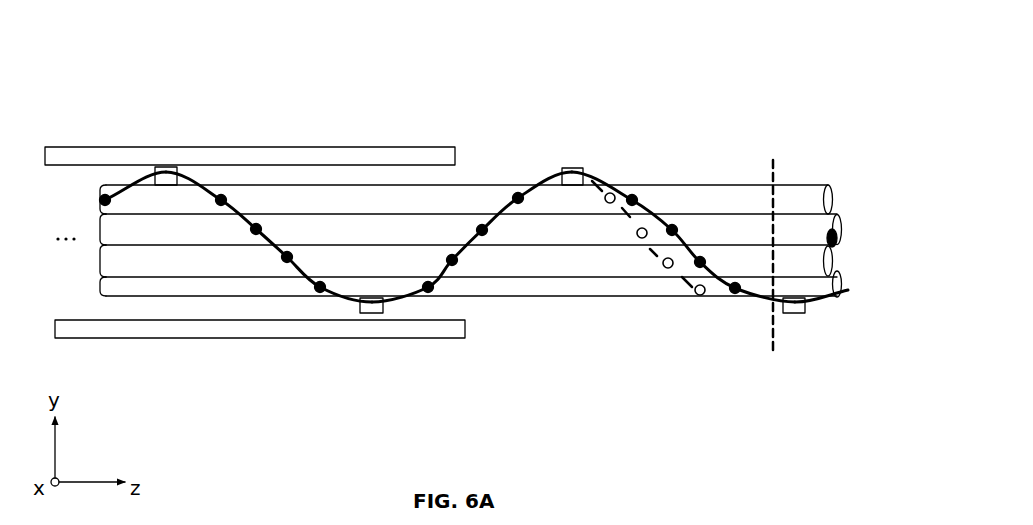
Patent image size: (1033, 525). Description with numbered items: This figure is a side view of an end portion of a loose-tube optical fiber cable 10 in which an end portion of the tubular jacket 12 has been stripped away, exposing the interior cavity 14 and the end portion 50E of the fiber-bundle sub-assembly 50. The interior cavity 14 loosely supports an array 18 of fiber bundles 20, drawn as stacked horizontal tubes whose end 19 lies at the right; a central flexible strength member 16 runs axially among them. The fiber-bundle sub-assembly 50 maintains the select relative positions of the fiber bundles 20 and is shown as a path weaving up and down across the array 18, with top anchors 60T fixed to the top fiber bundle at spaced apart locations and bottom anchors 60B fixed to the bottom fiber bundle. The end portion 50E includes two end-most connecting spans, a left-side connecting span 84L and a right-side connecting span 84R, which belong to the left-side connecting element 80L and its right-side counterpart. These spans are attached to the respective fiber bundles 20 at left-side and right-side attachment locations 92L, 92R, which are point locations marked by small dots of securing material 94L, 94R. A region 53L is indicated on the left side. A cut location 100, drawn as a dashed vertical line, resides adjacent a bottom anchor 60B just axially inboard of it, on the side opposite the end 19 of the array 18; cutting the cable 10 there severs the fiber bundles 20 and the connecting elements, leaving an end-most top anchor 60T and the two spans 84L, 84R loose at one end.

The loose-tube optical fiber cable 10 is at (158, 106).
The tubular jacket 12 is at (352, 148).
The interior cavity 14 is at (447, 175).
The strength member 16 is at (840, 246).
The array 18 is at (707, 173).
The end 19 is at (861, 196).
The fiber bundles 20 is at (372, 227).
The fiber-bundle sub-assembly 50 is at (624, 95).
The end portion 50E is at (717, 131).
The left region 53L is at (545, 274).
The top anchors 60T is at (167, 166).
The bottom anchors 60B is at (376, 314).
The left-side connecting element 80L is at (241, 201).
The left-side connecting span 84L is at (270, 241).
The right-side connecting span 84R is at (660, 253).
The left-side attachment locations 92L is at (294, 242).
The right-side attachment locations 92R is at (603, 206).
The left-side securing material 94L is at (287, 259).
The right-side securing material 94R is at (642, 228).
The cut location 100 is at (772, 338).